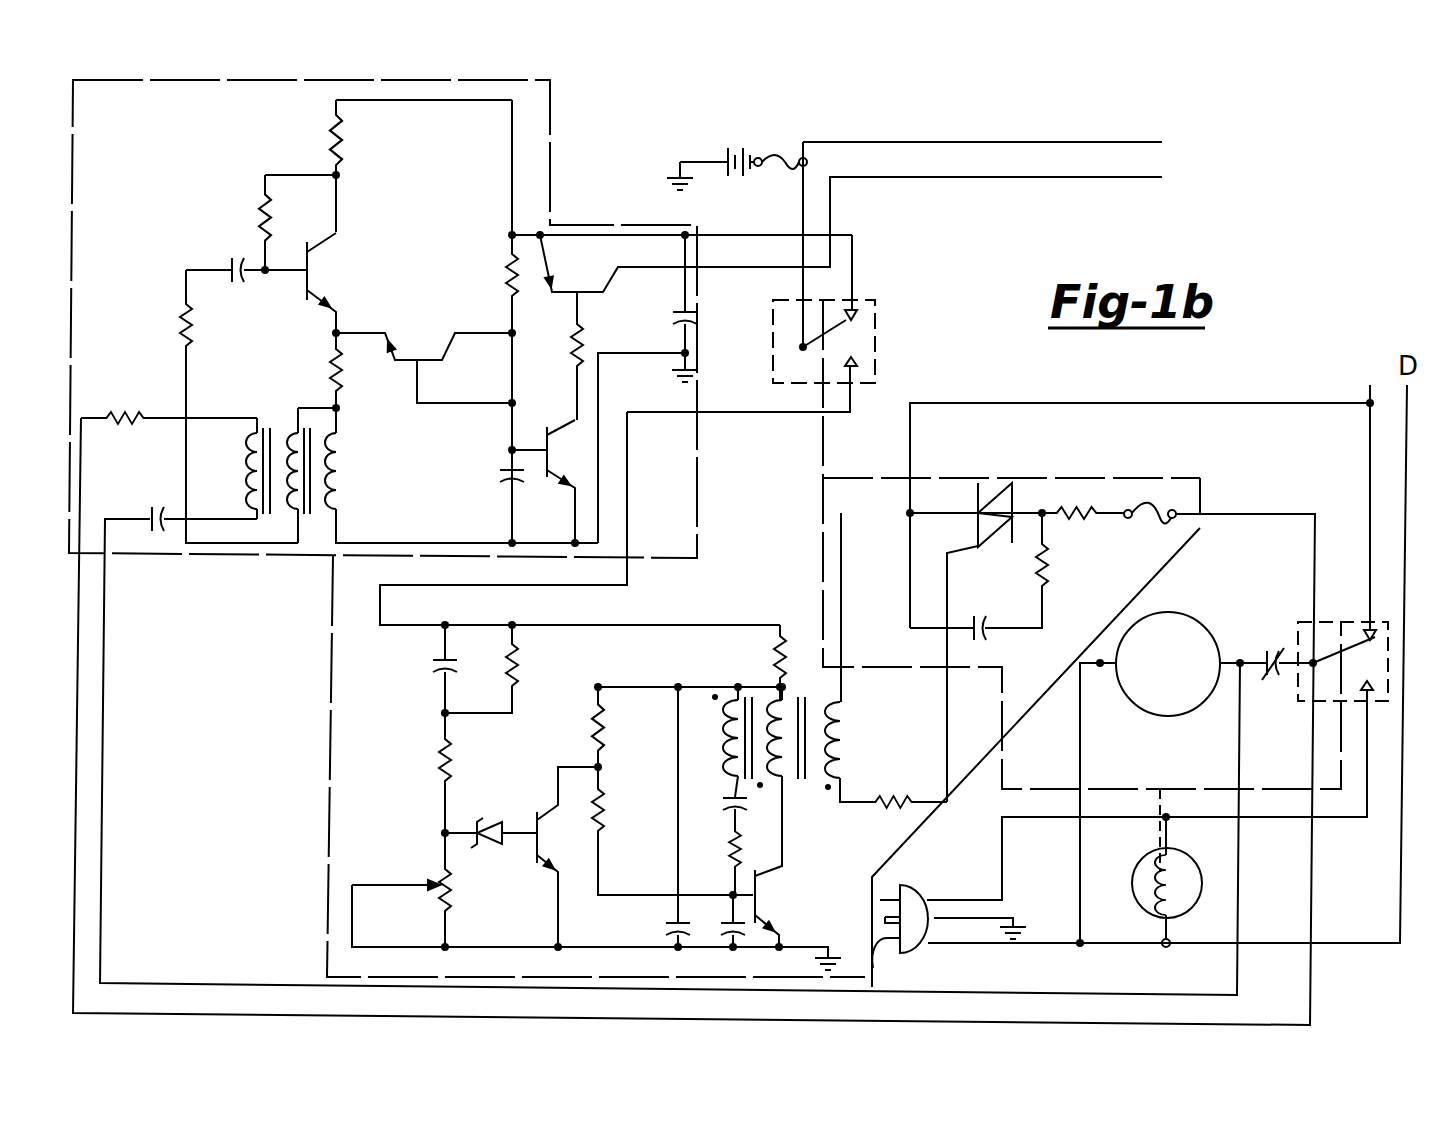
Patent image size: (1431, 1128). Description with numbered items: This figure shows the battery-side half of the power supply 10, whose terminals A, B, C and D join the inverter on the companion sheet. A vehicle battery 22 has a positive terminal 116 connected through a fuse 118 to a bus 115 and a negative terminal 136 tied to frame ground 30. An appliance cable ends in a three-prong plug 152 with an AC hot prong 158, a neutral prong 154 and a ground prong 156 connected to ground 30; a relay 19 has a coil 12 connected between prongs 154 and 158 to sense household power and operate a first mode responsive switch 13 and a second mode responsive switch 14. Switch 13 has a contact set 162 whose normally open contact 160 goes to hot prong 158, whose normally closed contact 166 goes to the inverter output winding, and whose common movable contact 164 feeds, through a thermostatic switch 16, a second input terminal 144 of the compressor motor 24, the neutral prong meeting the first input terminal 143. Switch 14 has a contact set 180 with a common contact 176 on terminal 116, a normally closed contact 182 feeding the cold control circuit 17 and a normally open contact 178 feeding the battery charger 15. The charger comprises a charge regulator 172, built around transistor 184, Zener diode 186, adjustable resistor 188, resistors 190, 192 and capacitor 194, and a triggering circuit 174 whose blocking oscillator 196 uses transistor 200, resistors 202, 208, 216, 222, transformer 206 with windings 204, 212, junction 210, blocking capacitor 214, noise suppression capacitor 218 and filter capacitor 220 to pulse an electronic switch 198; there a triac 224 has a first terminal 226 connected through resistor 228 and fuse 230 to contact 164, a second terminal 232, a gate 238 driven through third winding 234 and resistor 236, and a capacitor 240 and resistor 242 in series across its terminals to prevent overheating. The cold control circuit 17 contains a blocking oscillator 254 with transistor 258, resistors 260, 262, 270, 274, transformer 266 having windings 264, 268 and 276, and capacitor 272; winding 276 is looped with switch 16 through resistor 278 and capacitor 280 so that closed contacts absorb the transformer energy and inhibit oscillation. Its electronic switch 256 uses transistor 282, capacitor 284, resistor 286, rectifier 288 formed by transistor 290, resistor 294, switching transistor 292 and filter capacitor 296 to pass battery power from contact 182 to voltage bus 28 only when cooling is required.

The power supply 10 is at (1243, 252).
The relay coil 12 is at (1170, 865).
The first mode responsive switch 13 is at (1338, 582).
The second mode responsive switch 14 is at (878, 297).
The battery charger 15 is at (765, 568).
The thermostatic switch 16 is at (1272, 648).
The cold control circuit 17 is at (170, 171).
The relay 19 is at (1128, 882).
The vehicle battery 22 is at (737, 150).
The compressor motor 24 is at (1160, 613).
The voltage bus 28 is at (1030, 190).
The ground 30 is at (668, 178).
The bus 115 is at (1097, 118).
The positive terminal 116 is at (765, 160).
The fuse 118 is at (800, 170).
The negative terminal 136 is at (724, 162).
The first input terminal 143 is at (1102, 668).
The second motor input terminal 144 is at (1240, 668).
The three-prong plug 152 is at (915, 890).
The neutral prong 154 is at (902, 940).
The ground prong 156 is at (873, 968).
The AC hot prong 158 is at (882, 898).
The normally open contact 160 is at (1367, 694).
The first contact set 162 is at (1305, 622).
The common movable contact 164 is at (1312, 668).
The normally closed contact 166 is at (1368, 640).
The charge regulator 172 is at (525, 782).
The triggering circuit 174 is at (797, 858).
The common contact 176 is at (798, 350).
The normally open contact 178 is at (860, 362).
The contact set 180 is at (773, 325).
The normally closed contact 182 is at (865, 318).
The NPN transistor 184 is at (532, 860).
The Zener diode 186 is at (495, 822).
The resistor 188 is at (448, 900).
The resistor 190 is at (438, 770).
The resistor 192 is at (518, 672).
The capacitor 194 is at (432, 670).
The blocking oscillator 196 is at (760, 646).
The electronic switch 198 is at (898, 543).
The oscillating transistor 200 is at (765, 893).
The resistor 202 is at (602, 800).
The first winding 204 is at (772, 780).
The transformer 206 is at (828, 700).
The resistor 208 is at (797, 598).
The junction 210 is at (685, 660).
The second winding 212 is at (722, 740).
The blocking capacitor 214 is at (722, 806).
The resistor 216 is at (728, 850).
The noise suppression capacitor 218 is at (720, 935).
The filter capacitor 220 is at (665, 928).
The resistor 222 is at (592, 718).
The triac 224 is at (997, 482).
The first terminal 226 is at (1048, 510).
The resistor 228 is at (1090, 510).
The fuse 230 is at (1160, 500).
The second terminal 232 is at (978, 500).
The third winding 234 is at (830, 770).
The resistor 236 is at (895, 800).
The triac gate 238 is at (974, 536).
The capacitor 240 is at (982, 640).
The resistor 242 is at (1050, 570).
The blocking oscillator 254 is at (285, 331).
The electronic switch 256 is at (645, 334).
The NPN transistor 258 is at (318, 265).
The resistor 260 is at (332, 135).
The resistor 262 is at (340, 370).
The first winding 264 is at (340, 485).
The transformer 266 is at (259, 428).
The second transformer winding 268 is at (285, 425).
The resistor 270 is at (183, 325).
The DC blocking capacitor 272 is at (235, 260).
The resistor 274 is at (262, 205).
The third winding 276 is at (250, 462).
The resistor 278 is at (150, 398).
The capacitor 280 is at (157, 509).
The NPN transistor 282 is at (548, 450).
The capacitor 284 is at (500, 483).
The resistor 286 is at (508, 270).
The rectifier 288 is at (415, 348).
The NPN transistor 290 is at (417, 403).
The PNP switching transistor 292 is at (578, 290).
The resistor 294 is at (572, 350).
The filter capacitor 296 is at (678, 312).